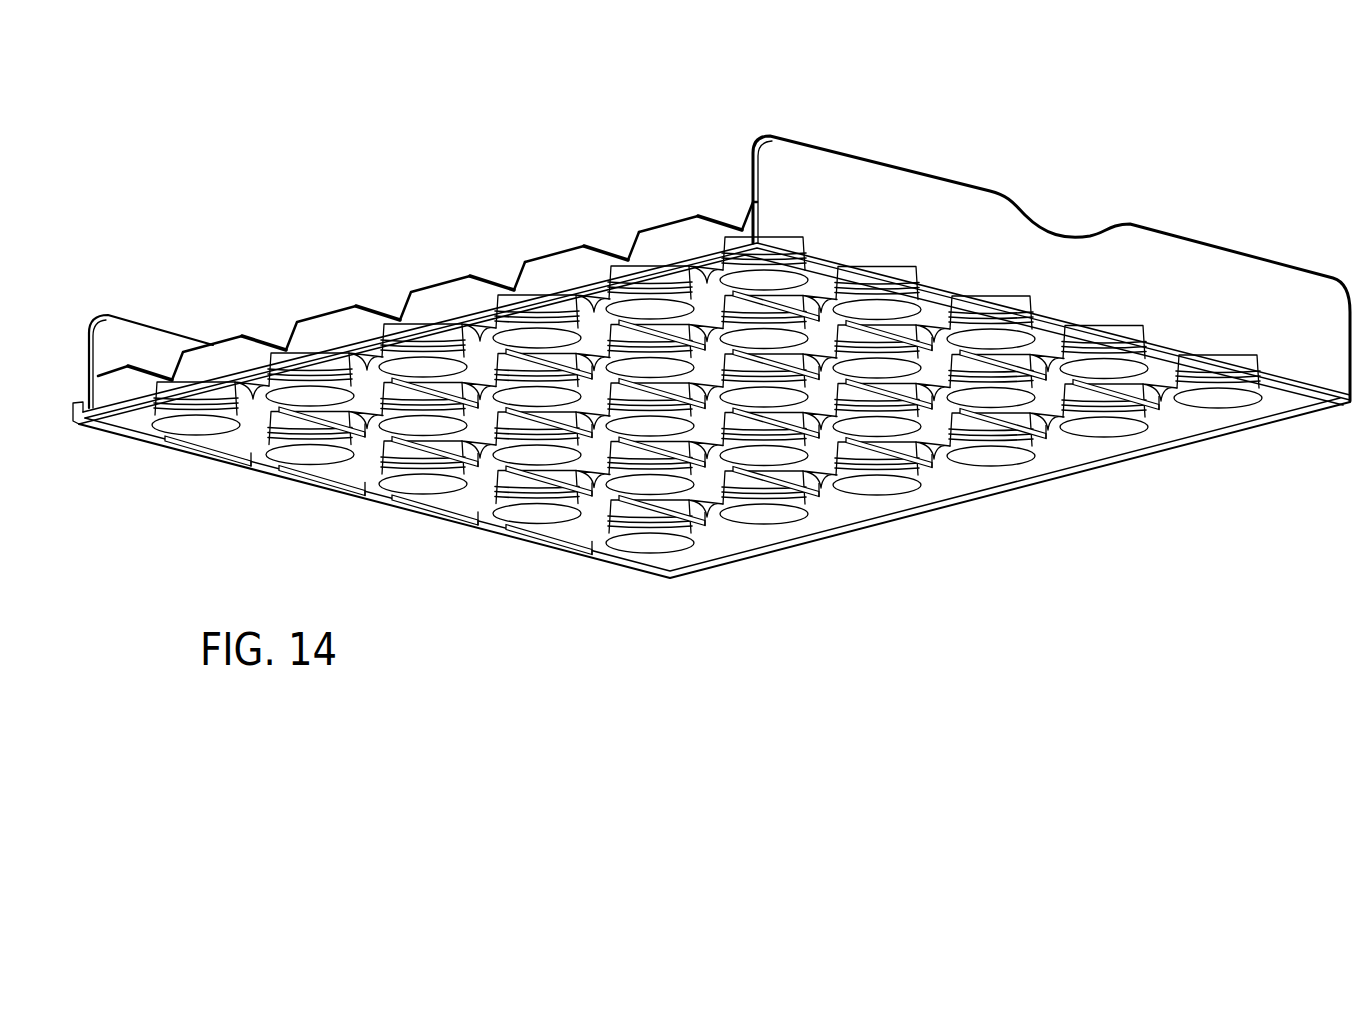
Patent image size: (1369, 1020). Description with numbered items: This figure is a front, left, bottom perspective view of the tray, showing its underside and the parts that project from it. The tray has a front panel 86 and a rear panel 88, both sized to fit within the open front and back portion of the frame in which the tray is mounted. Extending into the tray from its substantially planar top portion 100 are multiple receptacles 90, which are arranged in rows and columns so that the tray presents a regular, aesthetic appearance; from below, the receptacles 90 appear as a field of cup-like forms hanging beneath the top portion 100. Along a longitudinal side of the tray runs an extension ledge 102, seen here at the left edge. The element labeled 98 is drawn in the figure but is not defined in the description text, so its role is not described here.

The front panel 86 is at (923, 213).
The rear panel 88 is at (145, 342).
The receptacles 90 is at (762, 460).
The notch 98 is at (600, 245).
The top portion 100 is at (440, 285).
The extension ledge 102 is at (213, 392).